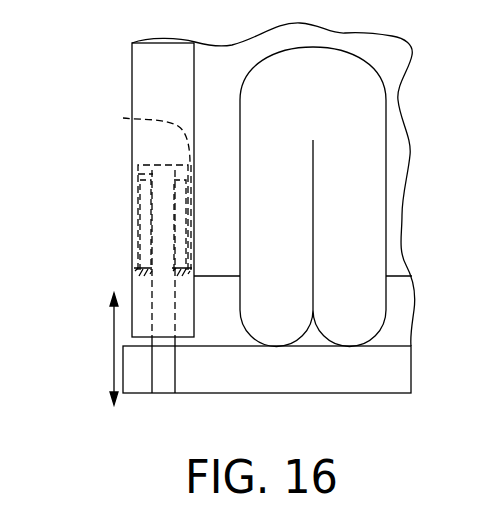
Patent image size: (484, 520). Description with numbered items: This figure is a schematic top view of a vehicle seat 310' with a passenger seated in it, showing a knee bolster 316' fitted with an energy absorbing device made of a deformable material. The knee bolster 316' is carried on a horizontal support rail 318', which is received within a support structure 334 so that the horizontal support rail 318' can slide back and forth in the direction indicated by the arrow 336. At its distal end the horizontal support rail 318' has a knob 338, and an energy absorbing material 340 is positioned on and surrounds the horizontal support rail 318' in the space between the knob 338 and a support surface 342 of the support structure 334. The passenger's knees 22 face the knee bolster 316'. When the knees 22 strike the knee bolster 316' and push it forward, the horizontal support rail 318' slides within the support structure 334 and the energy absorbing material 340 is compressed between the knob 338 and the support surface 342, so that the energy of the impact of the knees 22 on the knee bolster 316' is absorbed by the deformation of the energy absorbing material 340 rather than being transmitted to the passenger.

The vehicle seat 310' is at (225, 184).
The support surface 342 is at (136, 135).
The knob 338 is at (137, 172).
The energy absorbing material 340 is at (141, 222).
The support structure 334 is at (140, 290).
The arrow 336 is at (114, 348).
The horizontal support rail 318' is at (131, 306).
The knees 22 is at (349, 308).
The knee bolster 316' is at (278, 394).